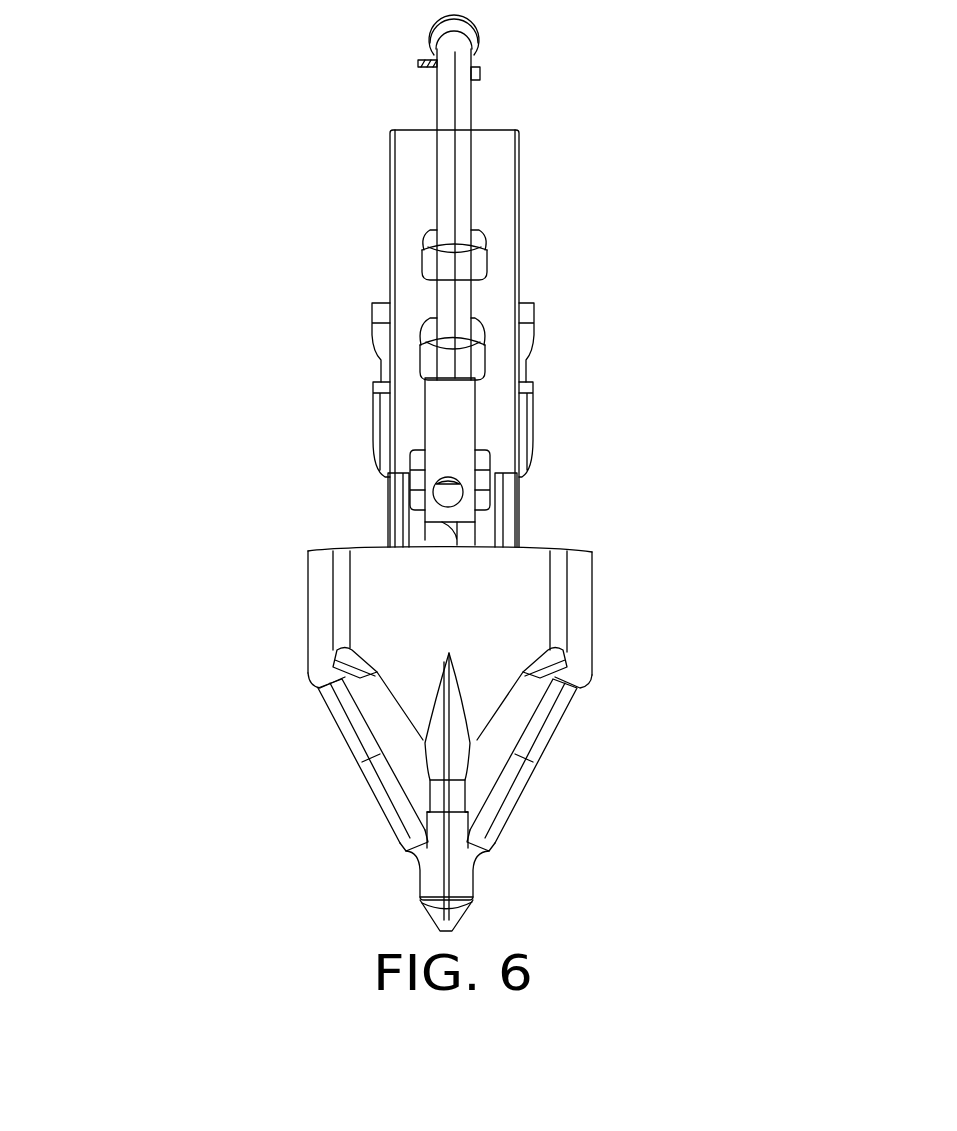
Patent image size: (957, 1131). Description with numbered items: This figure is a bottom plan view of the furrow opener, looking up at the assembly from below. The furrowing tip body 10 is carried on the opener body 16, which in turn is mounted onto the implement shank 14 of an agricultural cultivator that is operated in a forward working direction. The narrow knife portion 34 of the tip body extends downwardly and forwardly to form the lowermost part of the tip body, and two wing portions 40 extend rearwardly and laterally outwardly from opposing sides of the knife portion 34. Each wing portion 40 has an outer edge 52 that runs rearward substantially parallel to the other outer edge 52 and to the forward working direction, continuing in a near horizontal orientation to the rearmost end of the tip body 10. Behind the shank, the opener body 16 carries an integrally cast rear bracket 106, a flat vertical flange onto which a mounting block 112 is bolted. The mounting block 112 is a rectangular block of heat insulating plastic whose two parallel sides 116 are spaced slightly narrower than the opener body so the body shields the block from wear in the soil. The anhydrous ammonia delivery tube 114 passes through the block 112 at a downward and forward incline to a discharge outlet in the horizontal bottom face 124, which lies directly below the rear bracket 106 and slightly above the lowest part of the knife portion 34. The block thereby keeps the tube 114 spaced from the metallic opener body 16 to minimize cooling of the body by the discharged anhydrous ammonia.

The tip body 10 is at (168, 695).
The implement shank 14 is at (518, 197).
The opener body 16 is at (365, 491).
The knife portion 34 is at (478, 875).
The wing portion 40 is at (388, 737).
The outer edge 52 is at (310, 605).
The rear bracket 106 is at (430, 533).
The mounting block 112 is at (447, 435).
The anhydrous ammonia delivery tube 114 is at (468, 93).
The sides 116 is at (415, 405).
The bottom face 124 is at (456, 510).